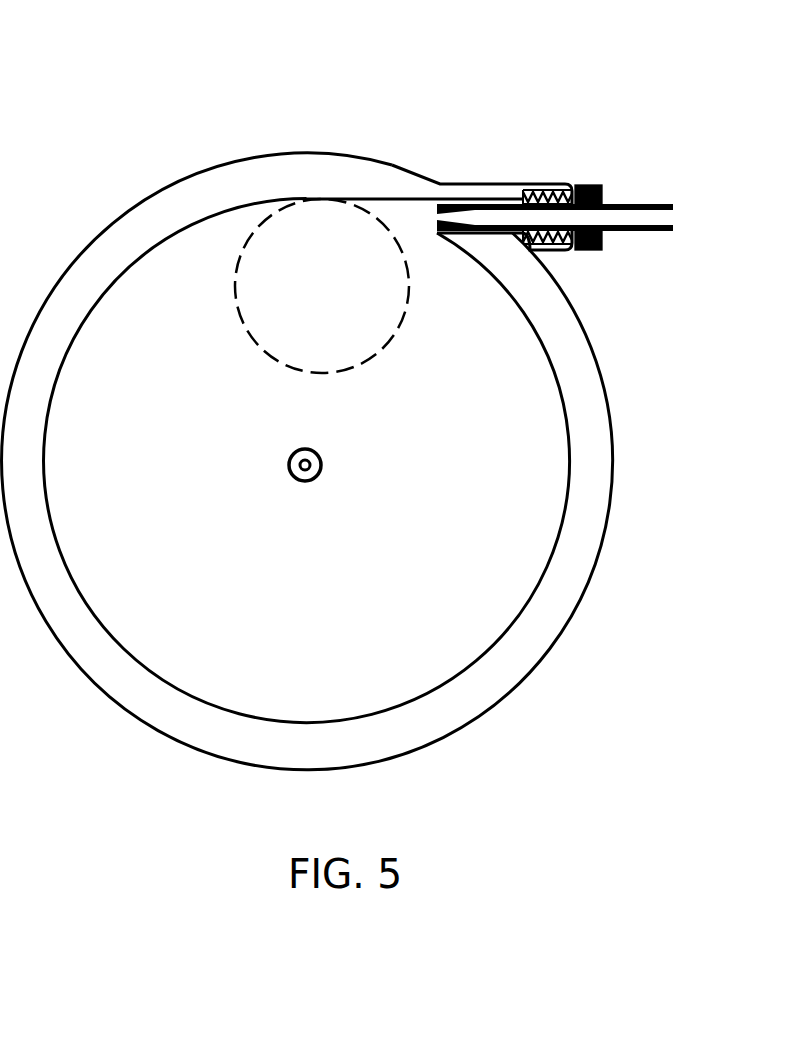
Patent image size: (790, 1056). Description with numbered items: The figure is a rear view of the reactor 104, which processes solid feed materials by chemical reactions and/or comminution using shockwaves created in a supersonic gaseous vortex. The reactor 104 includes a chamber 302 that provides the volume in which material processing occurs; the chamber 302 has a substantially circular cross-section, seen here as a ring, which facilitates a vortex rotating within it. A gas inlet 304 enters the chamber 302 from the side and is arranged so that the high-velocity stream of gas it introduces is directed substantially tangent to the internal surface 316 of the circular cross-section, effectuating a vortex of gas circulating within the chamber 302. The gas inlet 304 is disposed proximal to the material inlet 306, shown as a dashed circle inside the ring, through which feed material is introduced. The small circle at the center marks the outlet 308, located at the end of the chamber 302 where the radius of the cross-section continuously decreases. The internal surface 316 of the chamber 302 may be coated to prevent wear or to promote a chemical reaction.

The reactor 104 is at (560, 96).
The chamber 302 is at (610, 407).
The gas inlet 304 is at (603, 204).
The material inlet 306 is at (236, 288).
The outlet 308 is at (301, 449).
The internal surface 316 is at (288, 722).